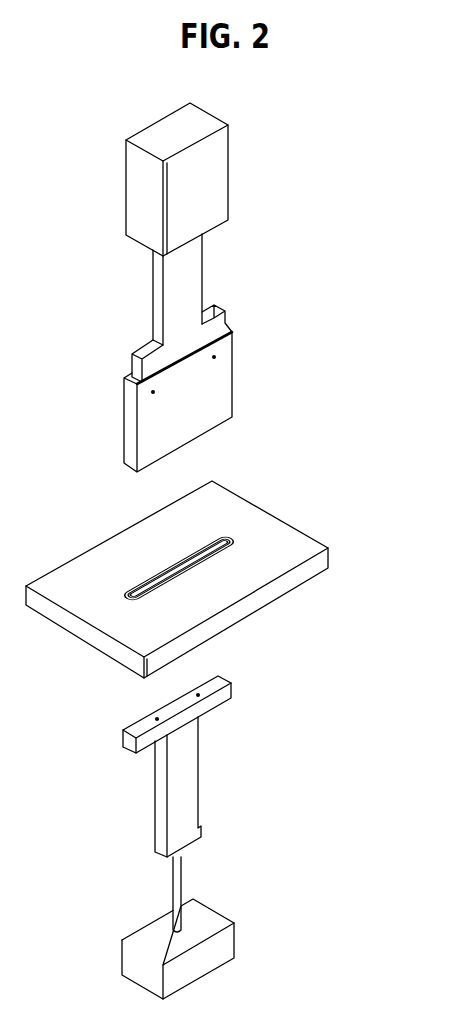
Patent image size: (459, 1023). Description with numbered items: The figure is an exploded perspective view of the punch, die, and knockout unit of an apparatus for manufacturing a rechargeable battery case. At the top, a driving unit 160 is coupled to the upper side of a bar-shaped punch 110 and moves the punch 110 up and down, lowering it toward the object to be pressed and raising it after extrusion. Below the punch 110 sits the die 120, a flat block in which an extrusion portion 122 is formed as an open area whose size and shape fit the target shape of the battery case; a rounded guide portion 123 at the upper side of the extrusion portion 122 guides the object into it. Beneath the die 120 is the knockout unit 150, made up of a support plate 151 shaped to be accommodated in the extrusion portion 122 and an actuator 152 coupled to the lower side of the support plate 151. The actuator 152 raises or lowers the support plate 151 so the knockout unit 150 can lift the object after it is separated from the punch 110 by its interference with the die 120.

The punch 110 is at (213, 370).
The die 120 is at (196, 549).
The extrusion portion 122 is at (160, 582).
The guide portion 123 is at (216, 540).
The knockout unit 150 is at (266, 837).
The support plate 151 is at (203, 703).
The actuator 152 is at (223, 942).
The driving unit 160 is at (212, 183).